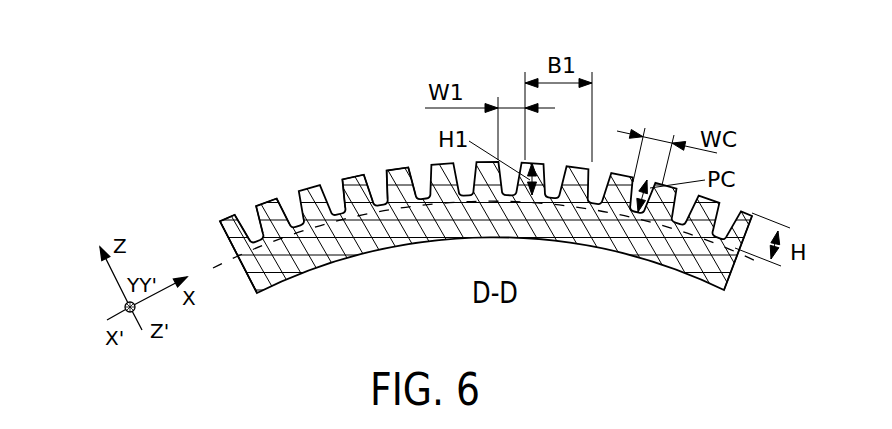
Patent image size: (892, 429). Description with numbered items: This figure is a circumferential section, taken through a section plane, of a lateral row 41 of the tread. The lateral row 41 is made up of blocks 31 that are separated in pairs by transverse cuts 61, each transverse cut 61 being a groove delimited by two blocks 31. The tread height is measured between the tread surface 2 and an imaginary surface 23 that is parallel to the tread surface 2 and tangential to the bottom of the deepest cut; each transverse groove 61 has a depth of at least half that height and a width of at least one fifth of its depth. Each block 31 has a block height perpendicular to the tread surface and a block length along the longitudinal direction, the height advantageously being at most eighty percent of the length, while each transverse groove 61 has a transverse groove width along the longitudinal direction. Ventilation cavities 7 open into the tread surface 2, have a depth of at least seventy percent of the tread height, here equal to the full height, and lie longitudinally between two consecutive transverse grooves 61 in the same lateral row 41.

The tread surface 2 is at (752, 211).
The ventilation cavity 7 is at (292, 199).
The imaginary surface 23 is at (733, 245).
The block 31 is at (387, 160).
The lateral row 41 is at (223, 234).
The transverse cut 61 is at (246, 208).